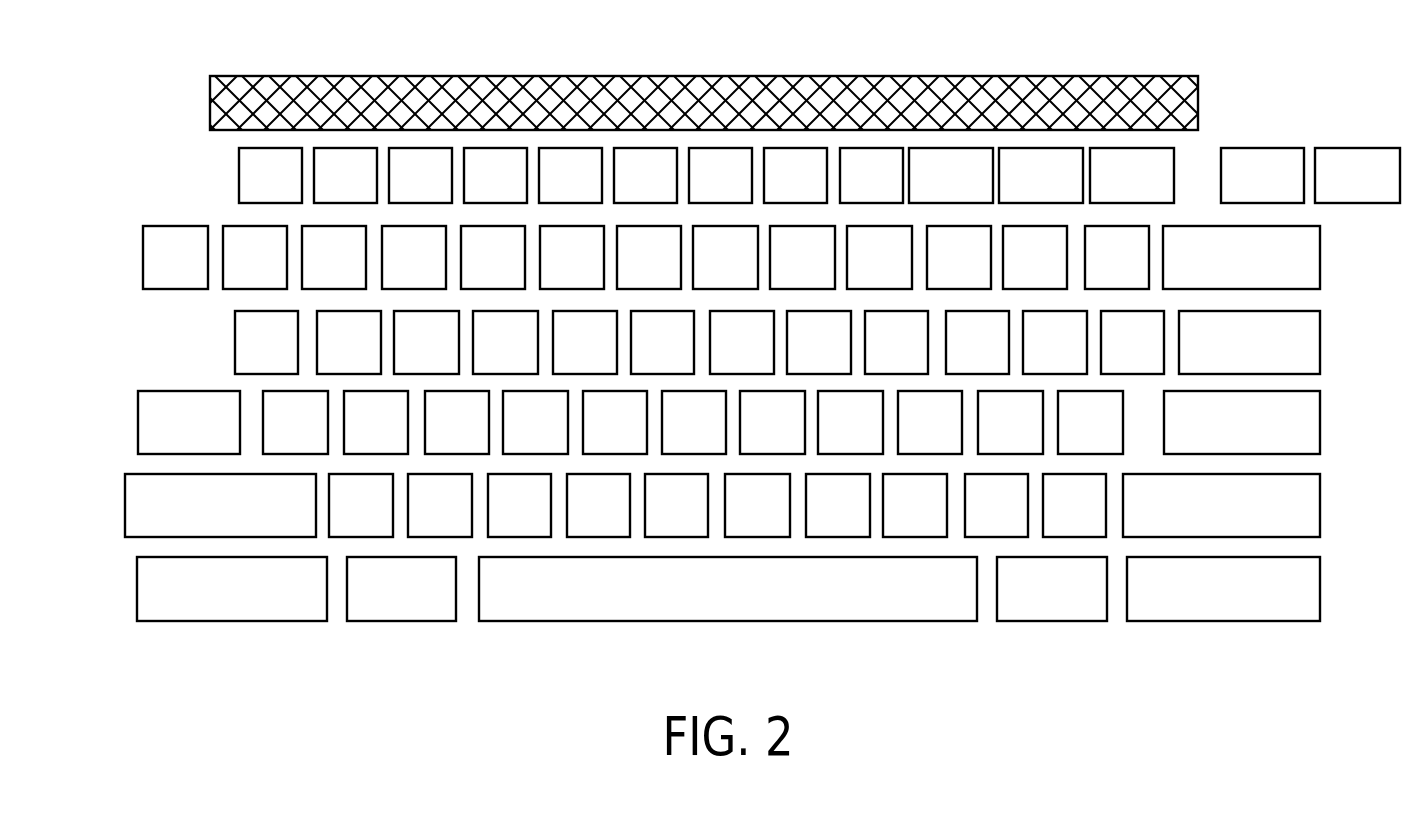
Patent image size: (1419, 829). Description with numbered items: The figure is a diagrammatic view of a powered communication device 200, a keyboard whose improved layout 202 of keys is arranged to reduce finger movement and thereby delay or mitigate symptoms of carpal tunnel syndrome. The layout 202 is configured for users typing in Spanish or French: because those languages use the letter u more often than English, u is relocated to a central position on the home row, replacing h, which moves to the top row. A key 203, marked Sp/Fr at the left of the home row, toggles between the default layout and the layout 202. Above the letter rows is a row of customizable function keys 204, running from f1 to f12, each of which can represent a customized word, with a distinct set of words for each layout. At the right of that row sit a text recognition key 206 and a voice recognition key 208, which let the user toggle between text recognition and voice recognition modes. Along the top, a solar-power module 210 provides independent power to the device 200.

The powered communication device 200 is at (718, 384).
The layout of keys 202 is at (188, 341).
The key 203 is at (138, 421).
The customizable function keys 204 is at (200, 177).
The text recognition key 206 is at (1263, 148).
The voice recognition key 208 is at (1357, 148).
The solar-power module 210 is at (210, 96).